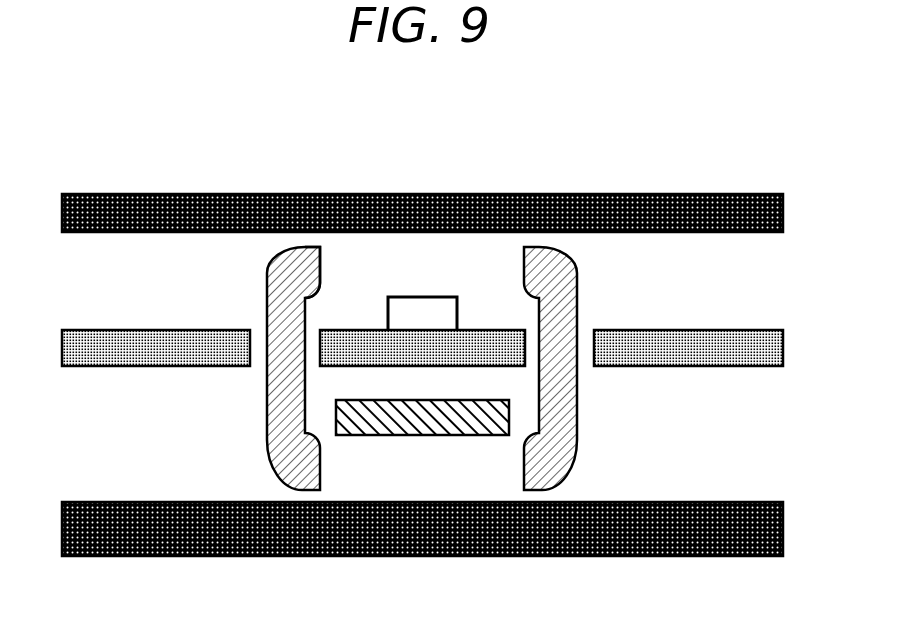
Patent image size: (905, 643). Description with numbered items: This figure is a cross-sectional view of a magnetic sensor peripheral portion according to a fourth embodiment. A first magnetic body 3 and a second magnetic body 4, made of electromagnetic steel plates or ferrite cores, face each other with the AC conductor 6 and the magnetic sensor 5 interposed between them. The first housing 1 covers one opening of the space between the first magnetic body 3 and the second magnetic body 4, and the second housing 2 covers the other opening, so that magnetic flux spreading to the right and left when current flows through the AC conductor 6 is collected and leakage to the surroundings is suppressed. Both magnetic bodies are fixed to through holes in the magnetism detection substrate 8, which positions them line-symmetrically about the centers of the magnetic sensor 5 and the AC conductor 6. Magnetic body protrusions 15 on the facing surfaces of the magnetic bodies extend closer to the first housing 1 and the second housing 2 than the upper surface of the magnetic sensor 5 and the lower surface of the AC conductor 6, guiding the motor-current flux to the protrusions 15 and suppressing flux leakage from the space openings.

The first housing 1 is at (652, 208).
The second housing 2 is at (148, 538).
The first magnetic body 3 is at (275, 418).
The second magnetic body 4 is at (575, 418).
The magnetic sensor 5 is at (442, 314).
The AC conductor 6 is at (447, 418).
The magnetism detection substrate 8 is at (147, 352).
The magnetic body protrusion 15 is at (320, 276).